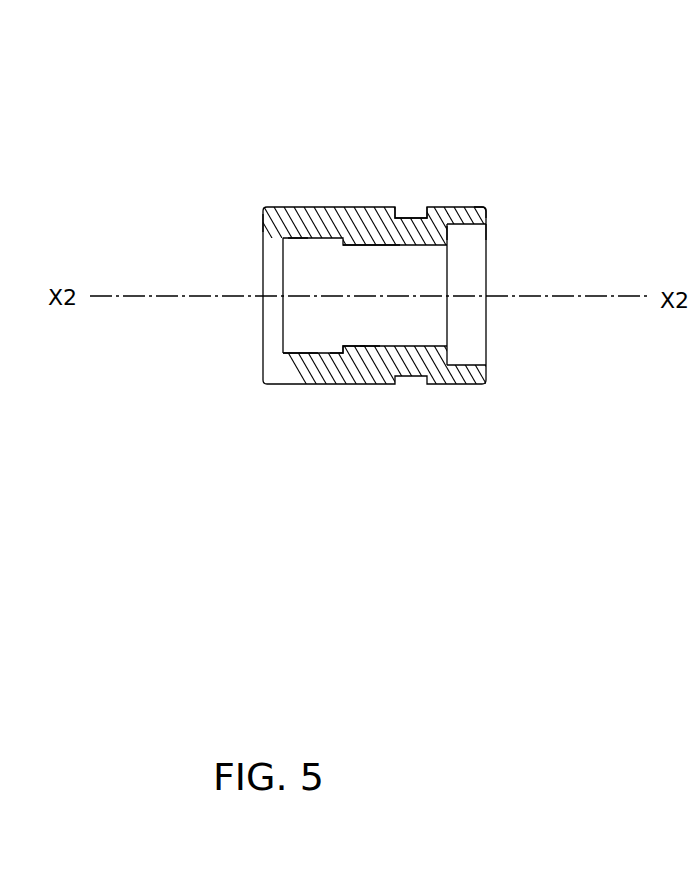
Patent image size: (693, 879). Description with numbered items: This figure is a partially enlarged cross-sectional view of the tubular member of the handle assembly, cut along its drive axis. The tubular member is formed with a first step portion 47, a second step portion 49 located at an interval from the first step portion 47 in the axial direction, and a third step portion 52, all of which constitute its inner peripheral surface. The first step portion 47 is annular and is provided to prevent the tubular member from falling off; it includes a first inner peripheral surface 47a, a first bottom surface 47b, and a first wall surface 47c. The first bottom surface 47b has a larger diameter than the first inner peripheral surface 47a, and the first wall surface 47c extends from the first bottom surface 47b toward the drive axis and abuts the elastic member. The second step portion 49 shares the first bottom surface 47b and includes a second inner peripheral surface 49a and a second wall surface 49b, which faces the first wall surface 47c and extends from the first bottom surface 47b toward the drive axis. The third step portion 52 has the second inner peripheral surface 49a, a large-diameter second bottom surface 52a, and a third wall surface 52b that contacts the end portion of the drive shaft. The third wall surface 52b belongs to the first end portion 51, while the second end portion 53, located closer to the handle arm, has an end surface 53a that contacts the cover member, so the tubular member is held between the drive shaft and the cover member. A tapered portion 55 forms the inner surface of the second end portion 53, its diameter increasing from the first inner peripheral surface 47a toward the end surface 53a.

The first step portion 47 is at (413, 482).
The first inner peripheral surface 47a is at (363, 346).
The first bottom surface 47b is at (306, 238).
The first wall surface 47c is at (318, 353).
The second step portion 49 is at (462, 93).
The second inner peripheral surface 49a is at (367, 247).
The second wall surface 49b is at (320, 238).
The first end portion 51 is at (474, 207).
The third step portion 52 is at (610, 185).
The second bottom surface 52a is at (486, 233).
The third wall surface 52b is at (447, 232).
The second end portion 53 is at (277, 207).
The end surface 53a is at (263, 222).
The tapered portion 55 is at (263, 343).